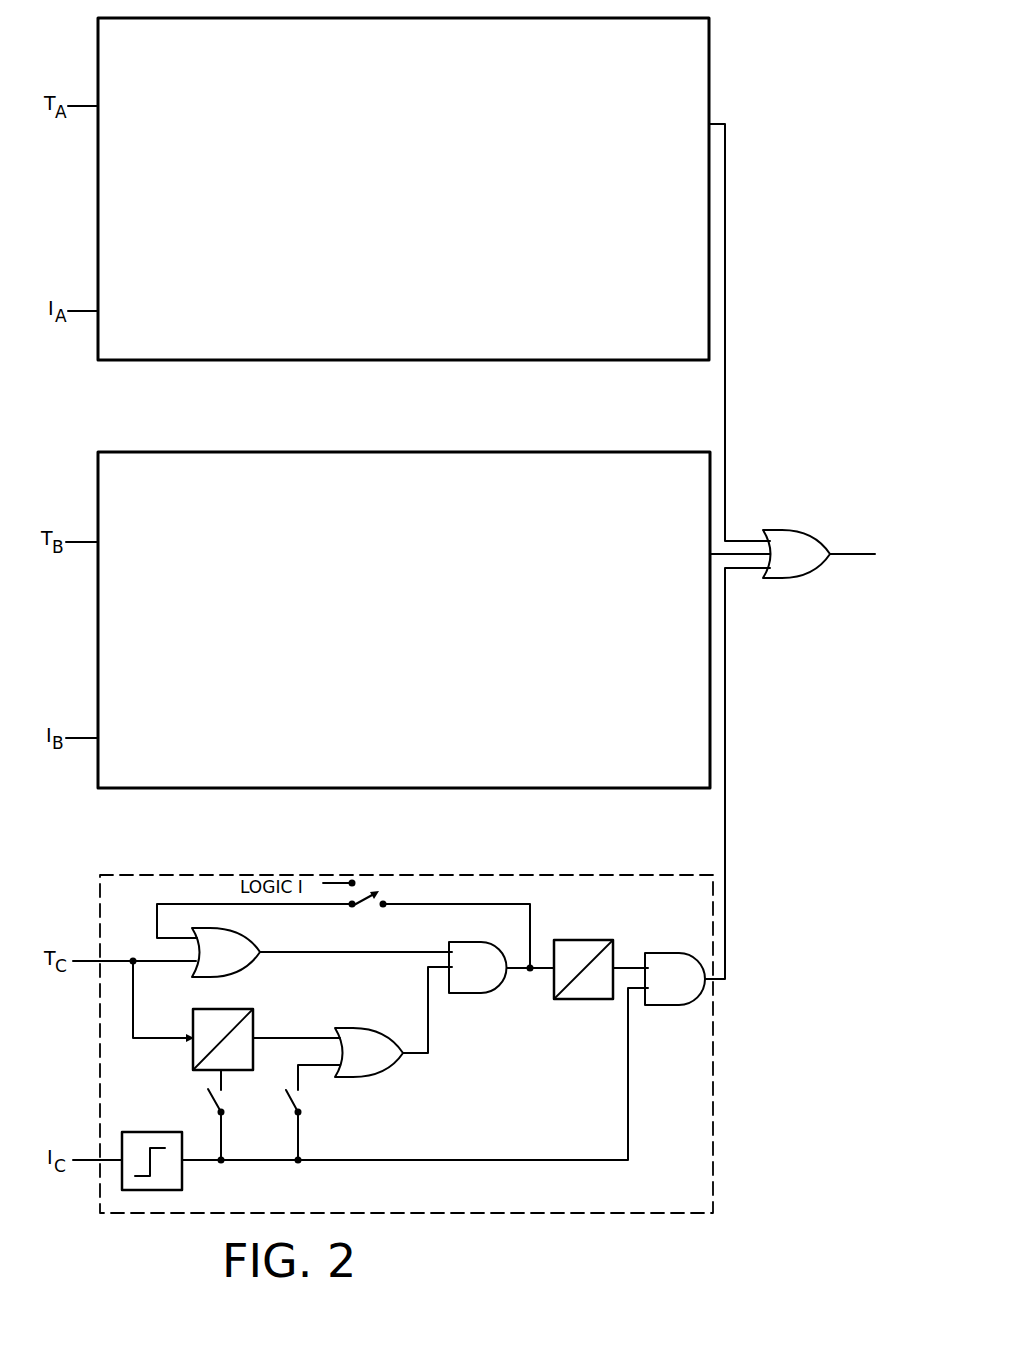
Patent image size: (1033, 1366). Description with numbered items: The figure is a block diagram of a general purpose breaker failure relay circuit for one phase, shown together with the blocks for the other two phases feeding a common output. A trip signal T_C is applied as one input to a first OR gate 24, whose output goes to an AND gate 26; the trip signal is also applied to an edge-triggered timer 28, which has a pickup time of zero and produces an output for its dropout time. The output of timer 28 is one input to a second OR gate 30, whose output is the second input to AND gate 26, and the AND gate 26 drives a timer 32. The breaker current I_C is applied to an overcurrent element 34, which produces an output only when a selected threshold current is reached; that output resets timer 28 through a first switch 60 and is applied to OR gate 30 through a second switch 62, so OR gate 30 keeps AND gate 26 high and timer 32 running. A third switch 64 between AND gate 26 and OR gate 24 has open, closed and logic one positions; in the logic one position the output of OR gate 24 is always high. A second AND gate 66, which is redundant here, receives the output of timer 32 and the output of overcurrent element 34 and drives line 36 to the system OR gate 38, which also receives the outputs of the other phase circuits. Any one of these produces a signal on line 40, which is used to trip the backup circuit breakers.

The first logic OR gate 24 is at (263, 938).
The AND gate 26 is at (484, 993).
The edge-triggered timer 28 is at (256, 1011).
The second OR gate 30 is at (396, 1064).
The timer 32 is at (590, 999).
The overcurrent element 34 is at (184, 1181).
The line 36 is at (727, 766).
The system OR gate 38 is at (796, 578).
The line 40 is at (855, 556).
The first switch 60 is at (225, 1104).
The second switch 62 is at (303, 1104).
The third switch 64 is at (366, 906).
The second AND gate 66 is at (678, 1005).